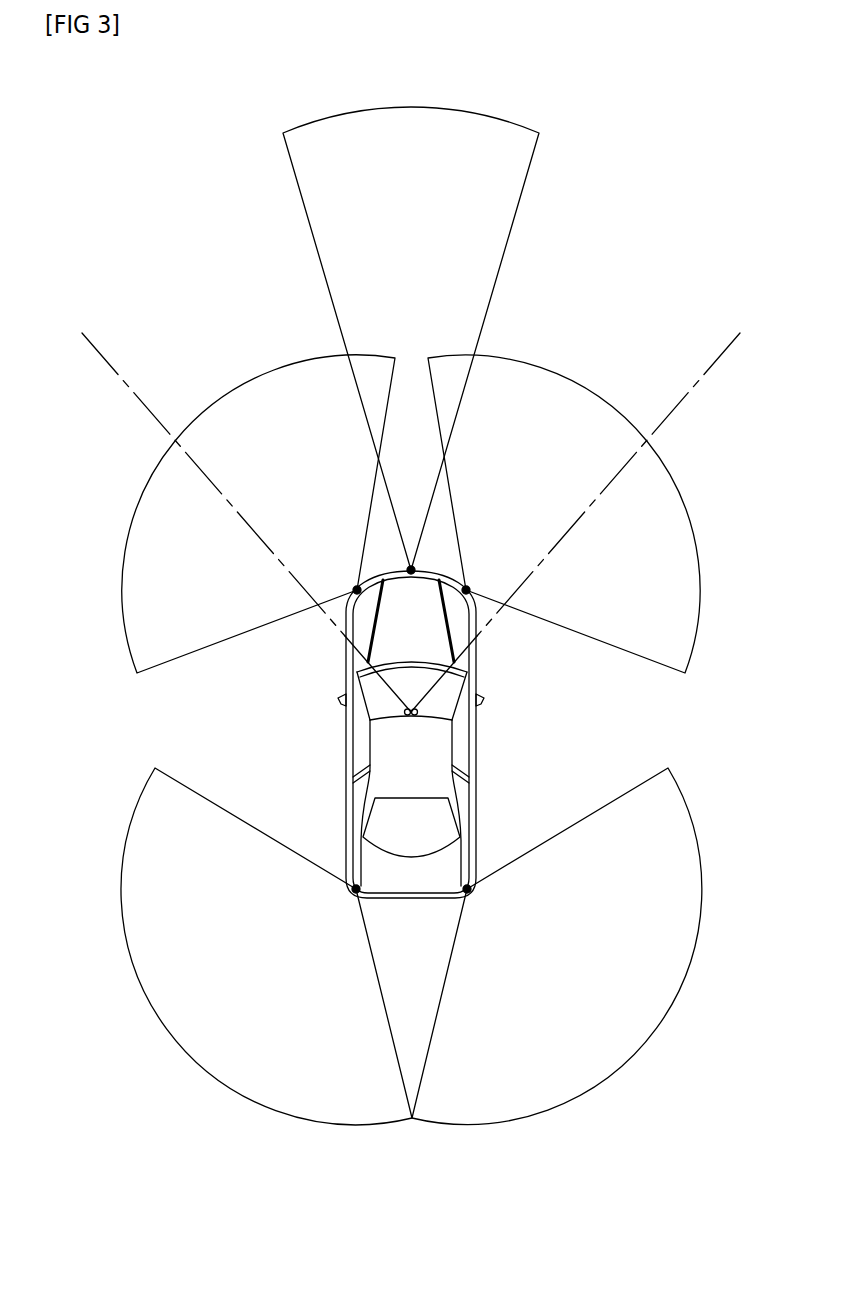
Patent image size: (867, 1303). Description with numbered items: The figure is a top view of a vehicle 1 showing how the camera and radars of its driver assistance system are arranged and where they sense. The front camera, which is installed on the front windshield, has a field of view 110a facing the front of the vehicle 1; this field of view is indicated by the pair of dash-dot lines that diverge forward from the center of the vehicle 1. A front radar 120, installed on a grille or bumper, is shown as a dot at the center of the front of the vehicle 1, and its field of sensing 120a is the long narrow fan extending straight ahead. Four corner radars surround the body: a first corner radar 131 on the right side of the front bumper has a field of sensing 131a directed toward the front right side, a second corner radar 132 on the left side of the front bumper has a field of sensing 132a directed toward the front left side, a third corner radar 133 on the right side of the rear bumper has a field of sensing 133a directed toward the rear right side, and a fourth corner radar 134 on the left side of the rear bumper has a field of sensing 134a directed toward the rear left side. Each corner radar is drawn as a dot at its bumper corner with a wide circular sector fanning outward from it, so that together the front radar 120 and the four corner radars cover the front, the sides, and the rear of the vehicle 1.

The vehicle 1 is at (107, 199).
The field of view 110a is at (700, 380).
The front radar 120 is at (412, 569).
The field of sensing 120a is at (490, 233).
The first corner radar 131 is at (467, 589).
The field of sensing 131a is at (590, 403).
The second corner radar 132 is at (356, 589).
The field of sensing 132a is at (233, 403).
The third corner radar 133 is at (471, 893).
The field of sensing 133a is at (653, 1013).
The fourth corner radar 134 is at (352, 893).
The field of sensing 134a is at (168, 1015).